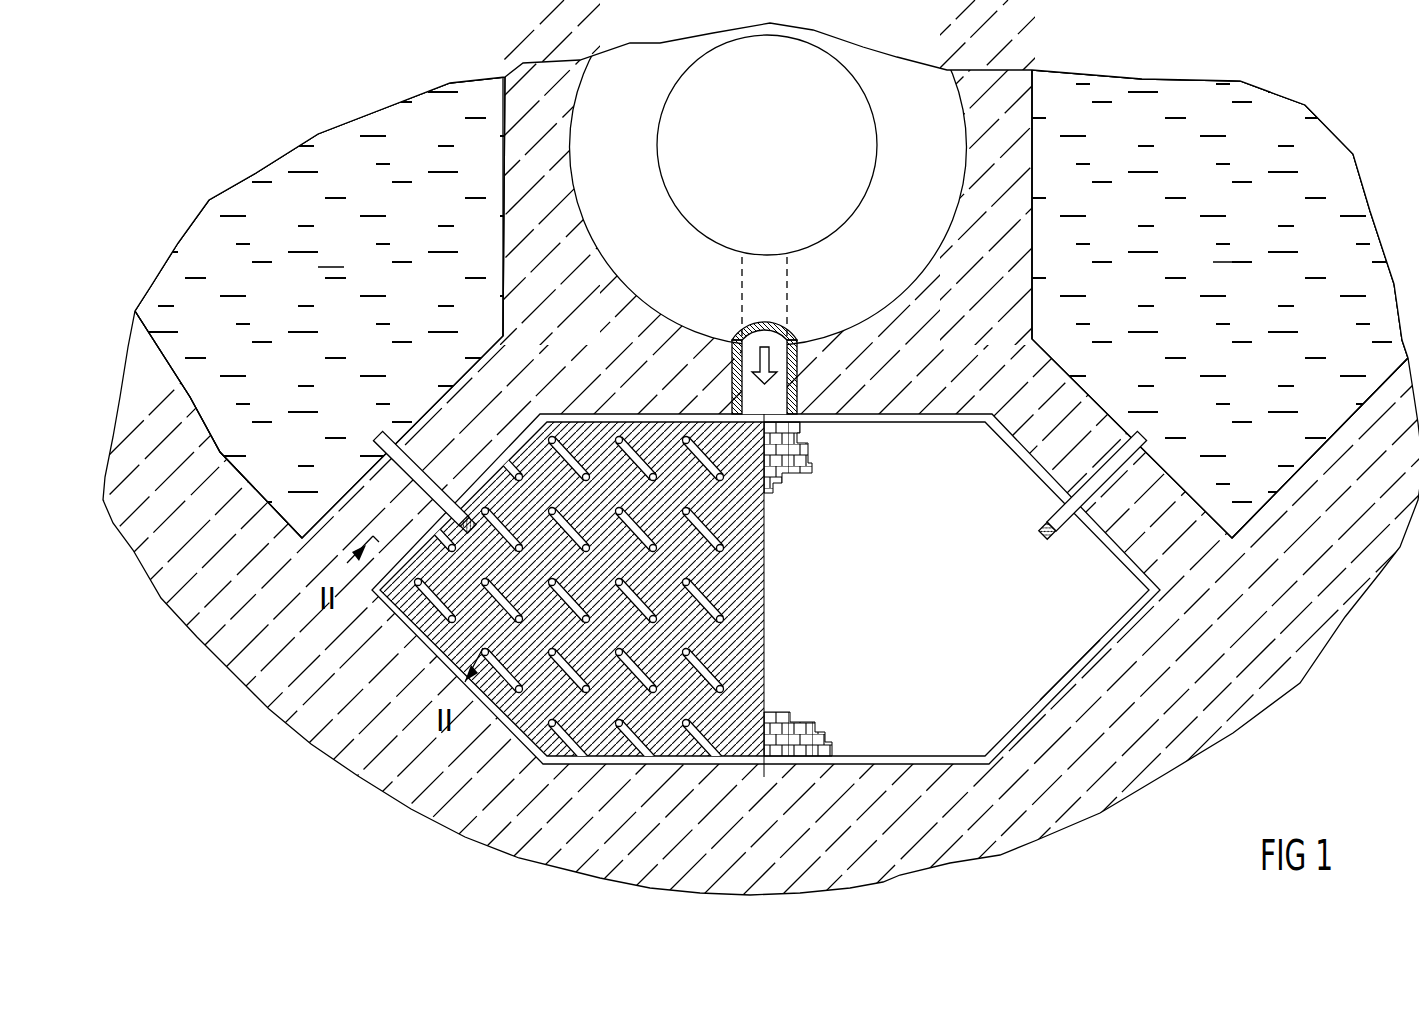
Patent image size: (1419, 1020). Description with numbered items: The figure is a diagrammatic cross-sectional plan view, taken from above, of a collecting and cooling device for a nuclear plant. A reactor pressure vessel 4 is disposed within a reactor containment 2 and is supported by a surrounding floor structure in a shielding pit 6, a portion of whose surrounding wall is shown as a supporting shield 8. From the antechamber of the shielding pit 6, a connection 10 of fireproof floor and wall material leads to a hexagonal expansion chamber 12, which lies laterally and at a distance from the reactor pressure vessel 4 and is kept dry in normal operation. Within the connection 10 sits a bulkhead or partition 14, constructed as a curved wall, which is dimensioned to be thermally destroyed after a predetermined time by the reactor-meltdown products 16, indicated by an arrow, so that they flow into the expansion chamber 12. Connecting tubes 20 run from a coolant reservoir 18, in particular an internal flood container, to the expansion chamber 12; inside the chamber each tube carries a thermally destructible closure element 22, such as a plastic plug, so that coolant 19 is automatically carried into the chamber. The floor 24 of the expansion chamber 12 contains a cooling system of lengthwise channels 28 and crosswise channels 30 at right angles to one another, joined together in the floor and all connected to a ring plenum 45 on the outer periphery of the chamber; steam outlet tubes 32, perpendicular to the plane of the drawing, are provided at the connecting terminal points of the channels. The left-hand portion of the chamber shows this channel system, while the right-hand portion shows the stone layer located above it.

The reactor containment 2 is at (194, 634).
The reactor pressure vessel 4 is at (779, 149).
The shielding pit 6 is at (658, 253).
The supporting shield 8 is at (527, 152).
The connection 10 is at (803, 338).
The expansion chamber 12 is at (1068, 682).
The bulkhead or partition 14 is at (758, 323).
The reactor-meltdown products 16 is at (728, 352).
The coolant reservoir 18 is at (182, 395).
The coolant 19 is at (771, 304).
The connecting tubes 20 is at (408, 467).
The thermally destructible closure element 22 is at (466, 527).
The floor 24 is at (778, 578).
The lengthwise channels 28 is at (700, 640).
The crosswise channels 30 is at (707, 677).
The steam outlet tubes 32 is at (725, 615).
The ring plenum 45 is at (1027, 725).